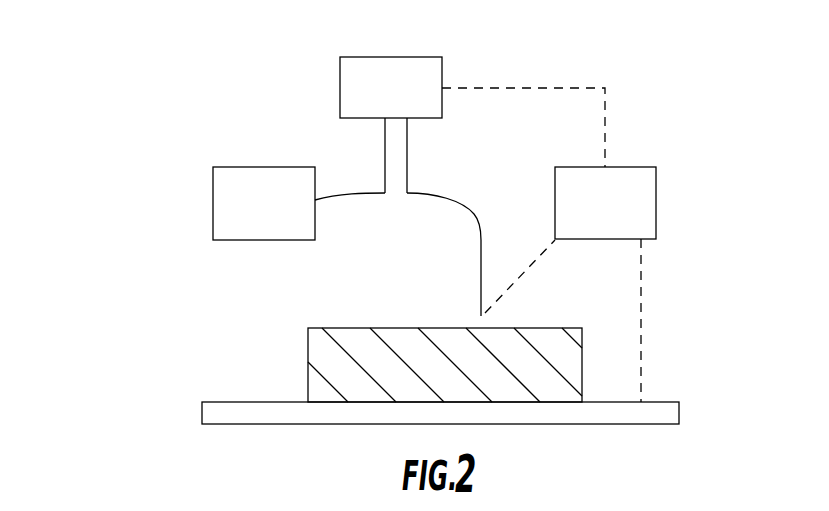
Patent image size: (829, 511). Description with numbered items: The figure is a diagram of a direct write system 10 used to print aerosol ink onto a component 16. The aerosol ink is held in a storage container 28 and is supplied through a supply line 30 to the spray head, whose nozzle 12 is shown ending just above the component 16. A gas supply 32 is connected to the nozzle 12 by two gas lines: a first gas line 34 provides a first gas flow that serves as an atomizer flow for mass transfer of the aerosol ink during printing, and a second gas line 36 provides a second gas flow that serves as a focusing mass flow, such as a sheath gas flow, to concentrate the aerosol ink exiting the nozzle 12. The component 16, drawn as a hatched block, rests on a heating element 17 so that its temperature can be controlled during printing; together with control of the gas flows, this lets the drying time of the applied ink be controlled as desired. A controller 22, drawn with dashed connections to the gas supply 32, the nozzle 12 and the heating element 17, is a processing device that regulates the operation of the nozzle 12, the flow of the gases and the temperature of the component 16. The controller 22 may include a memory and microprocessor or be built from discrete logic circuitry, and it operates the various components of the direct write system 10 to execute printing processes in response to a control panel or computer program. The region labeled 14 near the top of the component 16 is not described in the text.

The direct write system 10 is at (130, 222).
The nozzle 12 is at (468, 309).
The treated region 14 is at (557, 313).
The component 16 is at (332, 360).
The heating element 17 is at (215, 413).
The controller 22 is at (617, 215).
The storage container 28 is at (276, 215).
The supply line 30 is at (441, 182).
The gas supply 32 is at (403, 102).
The first gas line 34 is at (385, 148).
The second gas line 36 is at (407, 147).